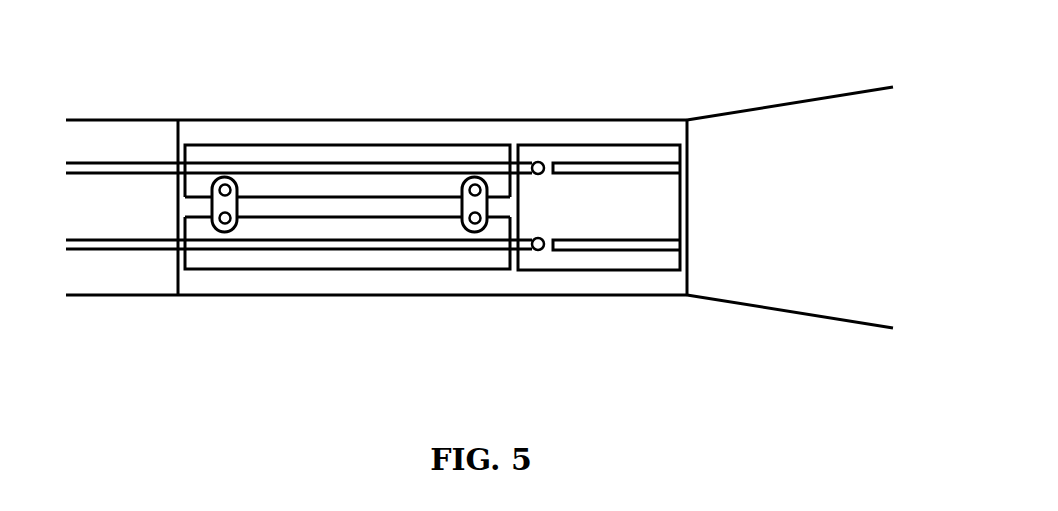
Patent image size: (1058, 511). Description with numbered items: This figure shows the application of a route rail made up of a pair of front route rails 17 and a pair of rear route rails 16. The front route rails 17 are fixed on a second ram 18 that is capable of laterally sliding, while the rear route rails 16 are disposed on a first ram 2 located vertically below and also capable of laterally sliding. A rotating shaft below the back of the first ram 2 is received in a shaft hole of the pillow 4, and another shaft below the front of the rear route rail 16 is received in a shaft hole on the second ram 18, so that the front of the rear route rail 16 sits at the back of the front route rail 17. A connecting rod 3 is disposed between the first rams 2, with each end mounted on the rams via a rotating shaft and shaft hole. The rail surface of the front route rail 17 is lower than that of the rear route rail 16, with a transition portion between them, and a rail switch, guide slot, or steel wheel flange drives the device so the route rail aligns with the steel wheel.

The first ram 2 is at (347, 155).
The connecting rod 3 is at (349, 136).
The pillow 4 is at (479, 184).
The rear route rail 16 is at (305, 145).
The front route rail 17 is at (598, 145).
The second ram 18 is at (602, 155).